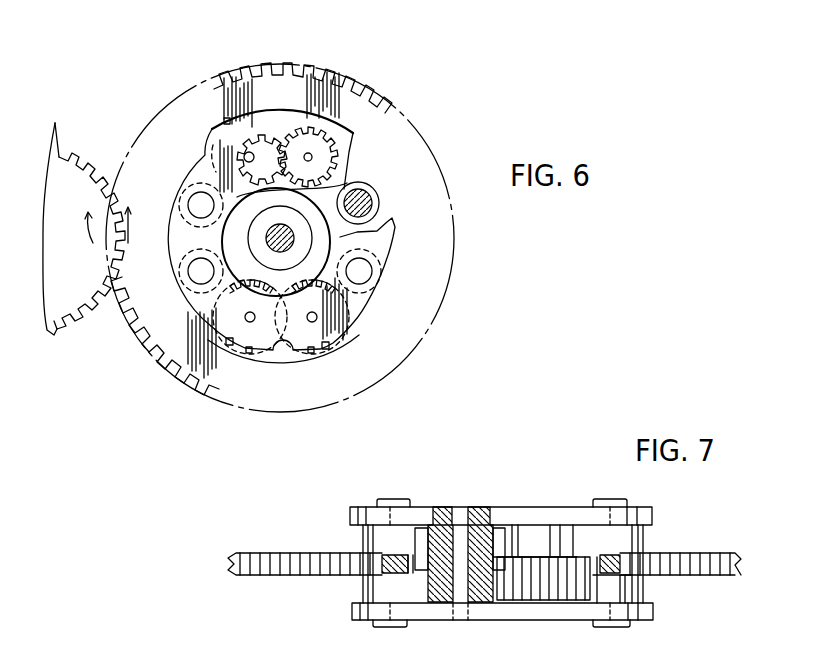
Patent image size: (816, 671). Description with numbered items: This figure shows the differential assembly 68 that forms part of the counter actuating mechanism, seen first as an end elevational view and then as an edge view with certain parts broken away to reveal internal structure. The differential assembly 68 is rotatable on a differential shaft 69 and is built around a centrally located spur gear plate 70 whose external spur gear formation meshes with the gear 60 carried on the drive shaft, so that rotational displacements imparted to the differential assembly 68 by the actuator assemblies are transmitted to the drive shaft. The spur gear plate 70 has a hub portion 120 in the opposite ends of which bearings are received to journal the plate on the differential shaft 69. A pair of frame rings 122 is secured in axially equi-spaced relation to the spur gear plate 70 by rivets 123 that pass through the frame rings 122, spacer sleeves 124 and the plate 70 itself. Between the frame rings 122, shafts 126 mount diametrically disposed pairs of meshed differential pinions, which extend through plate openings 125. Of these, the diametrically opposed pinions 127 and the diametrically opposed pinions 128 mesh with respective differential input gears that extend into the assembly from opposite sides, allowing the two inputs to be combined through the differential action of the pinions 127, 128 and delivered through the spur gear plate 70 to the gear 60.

In FIG. 6, the gear 60 is at (55, 148).
In FIG. 7, the gear 60 is at (241, 553).
In FIG. 6, the differential assembly 68 is at (132, 98).
In FIG. 6, the differential shaft 69 is at (267, 234).
In FIG. 6, the spur gear plate 70 is at (170, 379).
In FIG. 7, the spur gear plate 70 is at (710, 575).
In FIG. 6, the hub portion 120 is at (258, 222).
In FIG. 6, the frame rings 122 is at (388, 248).
In FIG. 7, the frame rings 122 is at (652, 512).
In FIG. 6, the rivets 123 is at (366, 200).
In FIG. 7, the rivets 123 is at (407, 628).
In FIG. 6, the spacer sleeves 124 is at (335, 133).
In FIG. 7, the spacer sleeves 124 is at (362, 590).
In FIG. 6, the plate openings 125 is at (296, 108).
In FIG. 6, the shafts 126 is at (306, 154).
In FIG. 6, the differential pinions 127 is at (386, 95).
In FIG. 7, the differential pinions 127 is at (547, 598).
In FIG. 6, the differential pinions 128 is at (227, 120).
In FIG. 7, the differential pinions 128 is at (478, 532).